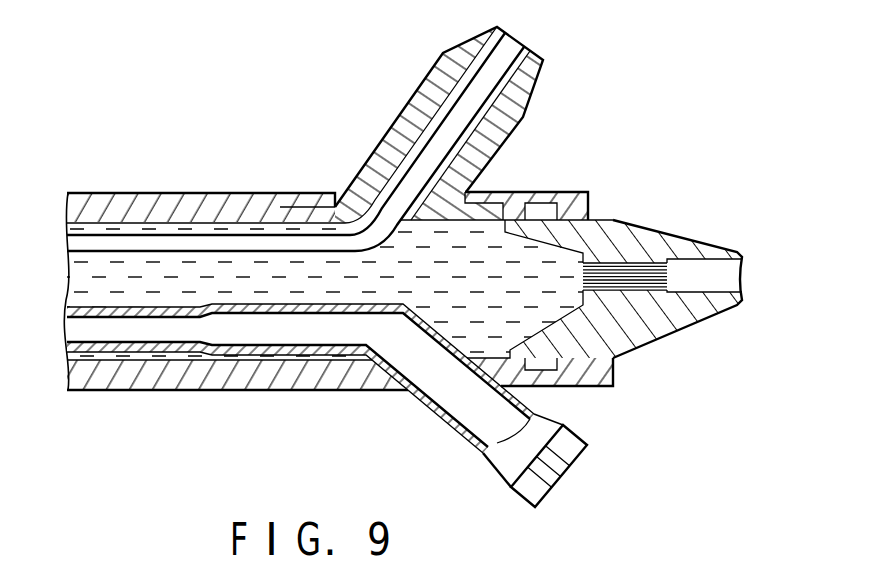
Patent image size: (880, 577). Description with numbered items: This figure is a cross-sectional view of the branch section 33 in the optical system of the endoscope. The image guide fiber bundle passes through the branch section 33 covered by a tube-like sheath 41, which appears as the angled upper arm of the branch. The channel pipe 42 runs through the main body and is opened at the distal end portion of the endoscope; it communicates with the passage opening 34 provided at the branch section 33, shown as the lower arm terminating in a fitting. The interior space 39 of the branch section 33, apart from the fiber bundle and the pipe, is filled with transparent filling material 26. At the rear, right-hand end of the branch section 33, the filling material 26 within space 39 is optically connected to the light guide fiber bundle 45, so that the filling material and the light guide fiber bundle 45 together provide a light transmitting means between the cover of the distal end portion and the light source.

The space 39 is at (181, 224).
The channel pipe 42 is at (138, 332).
The tube-like sheath 41 is at (510, 47).
The filling material 26 is at (515, 249).
The light guide fiber bundle 45 is at (655, 270).
The branch section 33 is at (386, 397).
The passage opening 34 is at (563, 462).